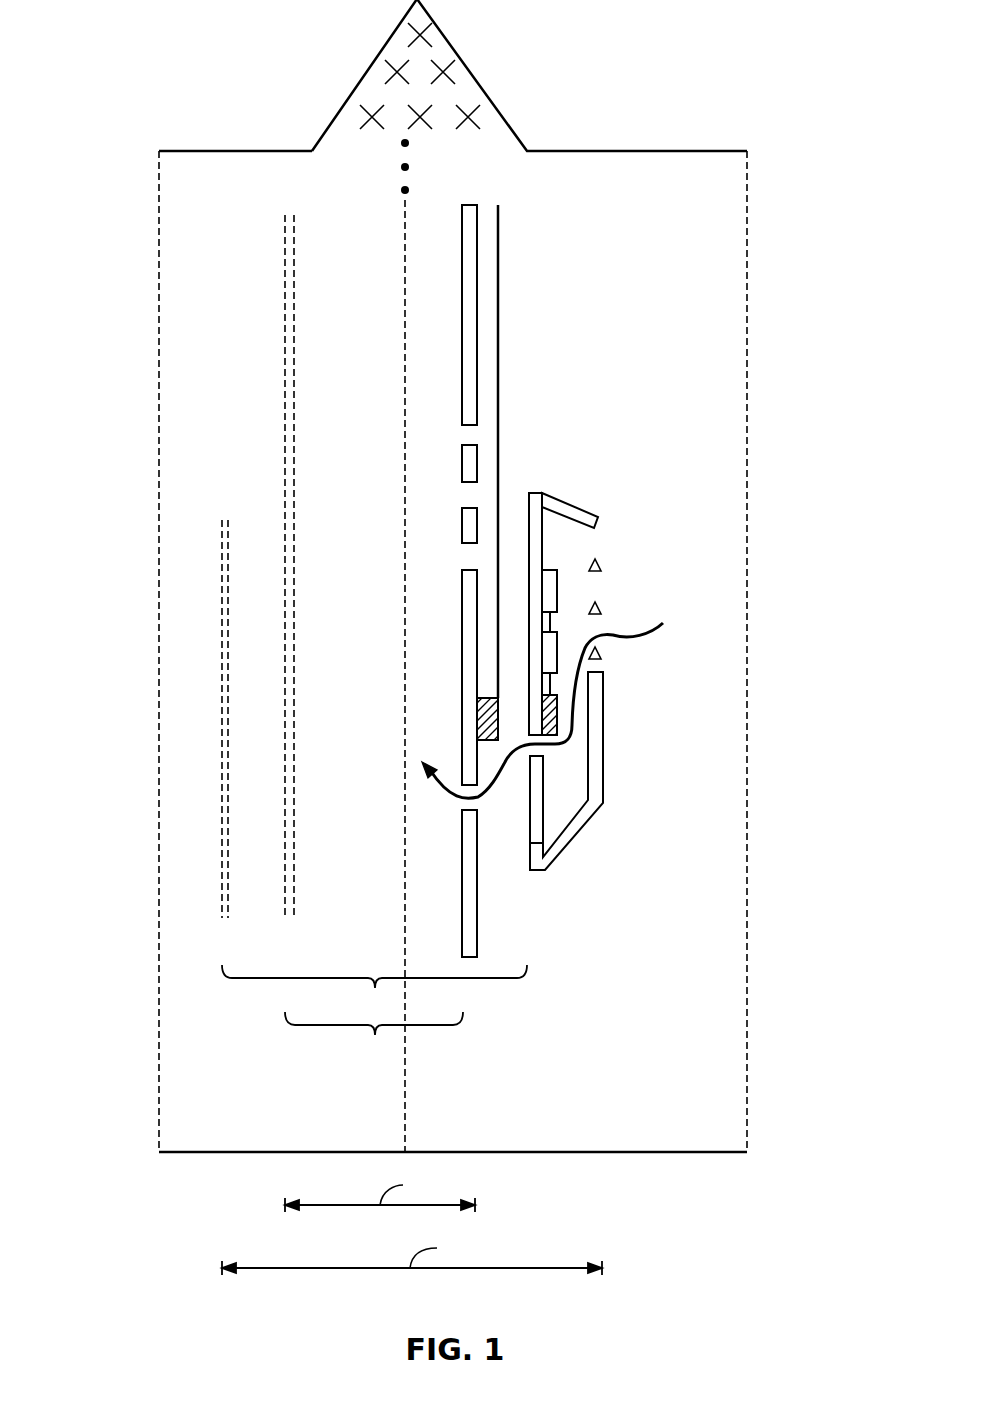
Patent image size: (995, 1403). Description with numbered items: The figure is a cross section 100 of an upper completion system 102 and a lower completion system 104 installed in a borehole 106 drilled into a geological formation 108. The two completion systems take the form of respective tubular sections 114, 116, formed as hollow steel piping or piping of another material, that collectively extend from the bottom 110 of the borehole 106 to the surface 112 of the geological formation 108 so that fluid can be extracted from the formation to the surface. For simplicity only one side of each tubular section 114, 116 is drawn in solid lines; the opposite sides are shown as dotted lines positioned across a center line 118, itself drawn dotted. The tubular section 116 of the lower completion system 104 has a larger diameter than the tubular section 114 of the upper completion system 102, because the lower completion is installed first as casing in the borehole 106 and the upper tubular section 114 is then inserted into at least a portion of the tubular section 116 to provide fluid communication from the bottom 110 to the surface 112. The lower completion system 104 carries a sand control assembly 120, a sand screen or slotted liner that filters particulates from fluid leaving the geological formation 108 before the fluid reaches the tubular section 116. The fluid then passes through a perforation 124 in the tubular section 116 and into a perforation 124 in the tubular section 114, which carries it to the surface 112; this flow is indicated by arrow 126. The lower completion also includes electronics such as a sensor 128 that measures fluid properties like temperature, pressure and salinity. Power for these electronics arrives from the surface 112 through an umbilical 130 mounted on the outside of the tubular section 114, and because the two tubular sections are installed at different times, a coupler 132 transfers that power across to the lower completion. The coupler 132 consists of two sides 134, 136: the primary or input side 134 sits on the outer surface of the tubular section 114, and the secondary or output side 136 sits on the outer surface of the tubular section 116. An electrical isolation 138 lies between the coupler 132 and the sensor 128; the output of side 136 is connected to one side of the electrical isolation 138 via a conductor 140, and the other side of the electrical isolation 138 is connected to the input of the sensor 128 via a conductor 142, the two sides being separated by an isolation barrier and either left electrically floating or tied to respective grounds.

The cross section 100 is at (162, 42).
The upper completion system 102 is at (374, 1042).
The lower completion system 104 is at (374, 993).
The borehole 106 is at (661, 172).
The geological formation 108 is at (793, 663).
The bottom 110 is at (688, 1152).
The surface 112 is at (217, 149).
The tubular section 114 is at (290, 205).
The tubular section 116 is at (226, 500).
The center line 118 is at (405, 307).
The sand control assembly 120 is at (638, 629).
The perforation 124 is at (455, 802).
The arrow 126 is at (478, 798).
The sensor 128 is at (545, 570).
The umbilical 130 is at (498, 295).
The coupler 132 is at (419, 686).
The side 134 is at (437, 738).
The side 136 is at (558, 717).
The electrical isolation 138 is at (558, 657).
The conductor 140 is at (558, 685).
The conductor 142 is at (631, 615).